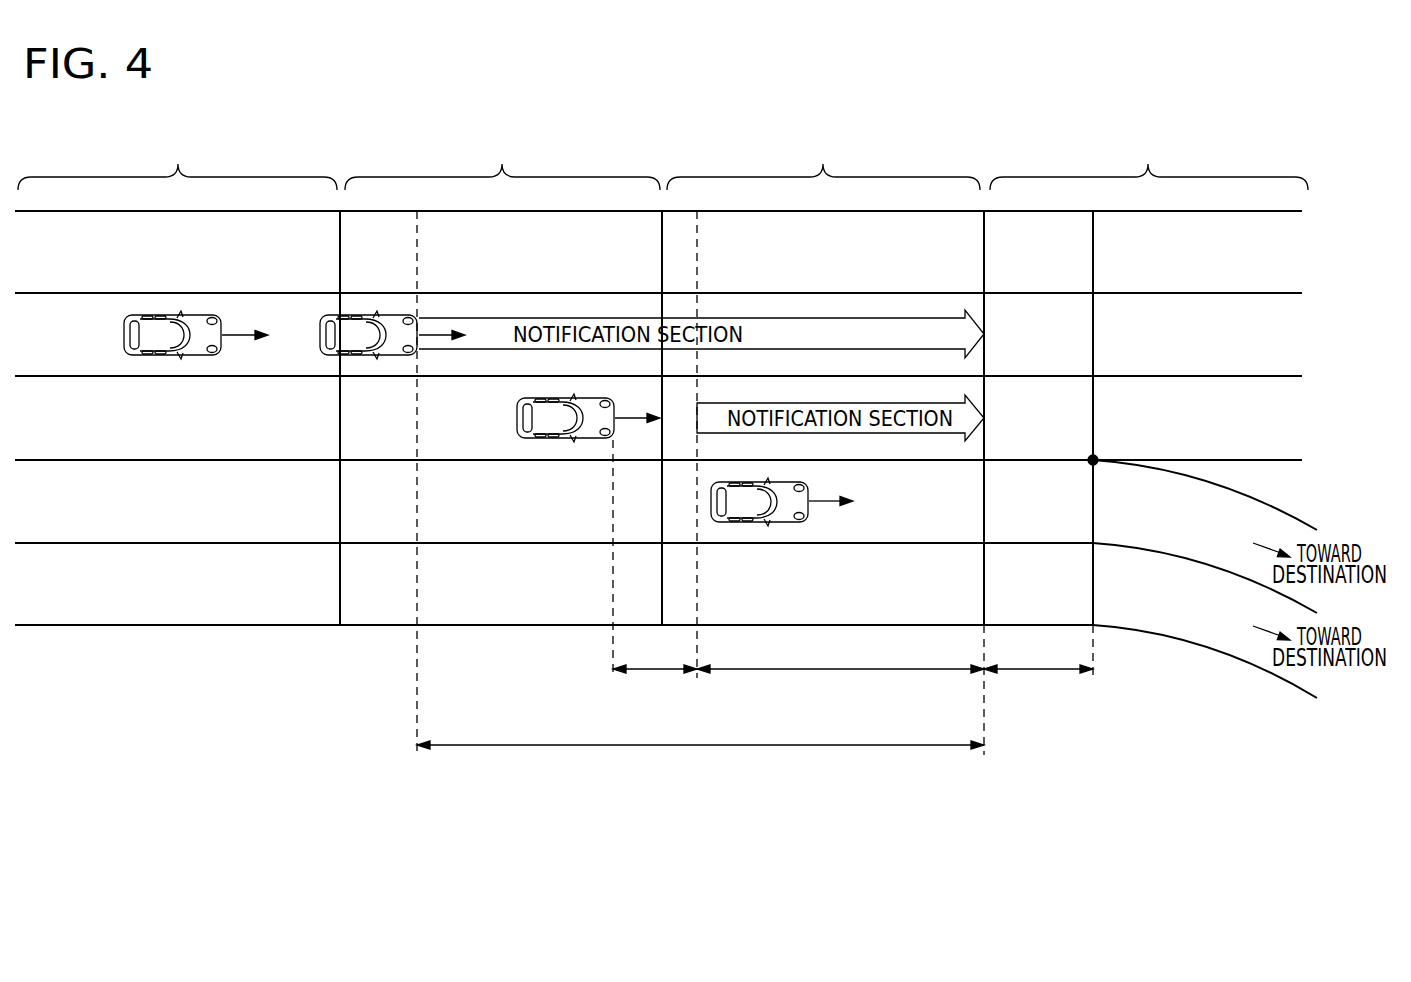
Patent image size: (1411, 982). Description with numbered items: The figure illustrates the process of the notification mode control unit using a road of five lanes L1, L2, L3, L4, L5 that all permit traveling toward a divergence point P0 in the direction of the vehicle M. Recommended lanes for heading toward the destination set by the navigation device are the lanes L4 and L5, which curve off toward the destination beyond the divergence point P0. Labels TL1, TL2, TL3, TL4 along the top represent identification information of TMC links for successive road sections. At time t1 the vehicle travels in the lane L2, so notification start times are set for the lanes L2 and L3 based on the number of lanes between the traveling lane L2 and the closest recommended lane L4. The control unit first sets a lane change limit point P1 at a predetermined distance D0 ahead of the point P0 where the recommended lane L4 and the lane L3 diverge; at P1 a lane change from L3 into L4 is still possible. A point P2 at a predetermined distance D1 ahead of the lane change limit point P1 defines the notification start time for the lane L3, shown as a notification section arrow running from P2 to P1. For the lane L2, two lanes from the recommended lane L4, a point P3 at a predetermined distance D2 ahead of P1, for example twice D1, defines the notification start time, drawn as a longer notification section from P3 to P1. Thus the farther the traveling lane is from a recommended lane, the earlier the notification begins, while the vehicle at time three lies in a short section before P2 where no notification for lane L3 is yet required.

The lane L1 is at (68, 268).
The lane L2 is at (68, 352).
The lane L3 is at (68, 435).
The recommended lane L4 is at (68, 518).
The recommended lane L5 is at (68, 601).
The divergence point P0 is at (1093, 197).
The lane change limit point P1 is at (984, 197).
The notification start point P2 is at (697, 197).
The notification start point P3 is at (417, 197).
The TMC link identification information TL1 is at (177, 162).
The TMC link identification information TL2 is at (502, 162).
The TMC link identification information TL3 is at (823, 162).
The TMC link identification information TL4 is at (1149, 162).
The predetermined distance D0 is at (1038, 654).
The predetermined distance D1 is at (840, 654).
The predetermined distance D2 is at (700, 729).